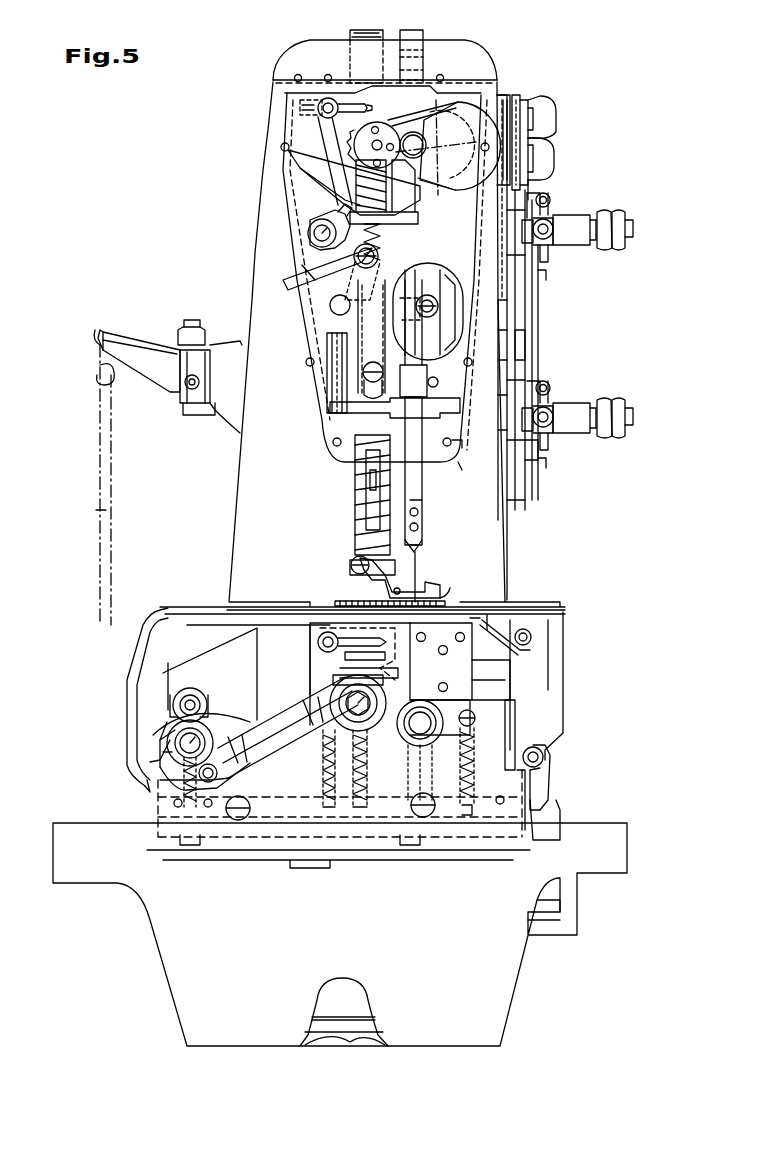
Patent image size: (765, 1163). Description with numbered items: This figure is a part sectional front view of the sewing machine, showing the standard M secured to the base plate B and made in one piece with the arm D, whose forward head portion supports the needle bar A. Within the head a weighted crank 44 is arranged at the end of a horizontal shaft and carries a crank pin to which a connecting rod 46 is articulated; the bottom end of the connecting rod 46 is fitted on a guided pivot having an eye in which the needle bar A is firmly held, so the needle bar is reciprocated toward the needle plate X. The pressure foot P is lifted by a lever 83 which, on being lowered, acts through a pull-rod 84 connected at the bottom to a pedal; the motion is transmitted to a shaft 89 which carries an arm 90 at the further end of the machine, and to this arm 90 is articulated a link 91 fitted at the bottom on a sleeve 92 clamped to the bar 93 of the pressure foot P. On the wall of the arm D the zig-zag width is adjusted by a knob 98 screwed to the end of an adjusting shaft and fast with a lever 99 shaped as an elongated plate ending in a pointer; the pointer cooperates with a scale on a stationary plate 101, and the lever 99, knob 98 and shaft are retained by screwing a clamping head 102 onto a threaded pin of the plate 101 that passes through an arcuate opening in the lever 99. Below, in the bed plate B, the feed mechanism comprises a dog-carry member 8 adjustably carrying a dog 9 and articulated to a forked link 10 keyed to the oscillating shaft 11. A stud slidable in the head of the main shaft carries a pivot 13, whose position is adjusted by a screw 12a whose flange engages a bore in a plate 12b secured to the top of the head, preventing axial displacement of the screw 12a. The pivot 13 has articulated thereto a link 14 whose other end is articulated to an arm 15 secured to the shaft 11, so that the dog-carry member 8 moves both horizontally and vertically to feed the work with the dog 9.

The weighted crank 44 is at (456, 112).
The stationary plate 101 is at (502, 98).
The lever 99 is at (518, 110).
The knob 98 is at (546, 118).
The clamping head 102 is at (548, 152).
The arm D is at (272, 162).
The shaft 89 is at (326, 228).
The connecting rod 46 is at (420, 215).
The arm 90 is at (285, 279).
The link 91 is at (370, 292).
The lever 83 is at (130, 355).
The pull-rod 84 is at (108, 510).
The sleeve 92 is at (330, 410).
The standard M is at (247, 513).
The bar of the pressure foot 93 is at (358, 500).
The needle bar A is at (420, 492).
The pressure foot P is at (372, 586).
The dog 9 is at (442, 594).
The needle plate X is at (338, 605).
The dog-carry member 8 is at (245, 667).
The plate 12b is at (325, 668).
The screw 12a is at (393, 668).
The link 10 is at (170, 690).
The link 14 is at (287, 737).
The oscillating shaft 11 is at (185, 745).
The arm 15 is at (142, 778).
The pivot 13 is at (368, 736).
The base plate B is at (540, 800).